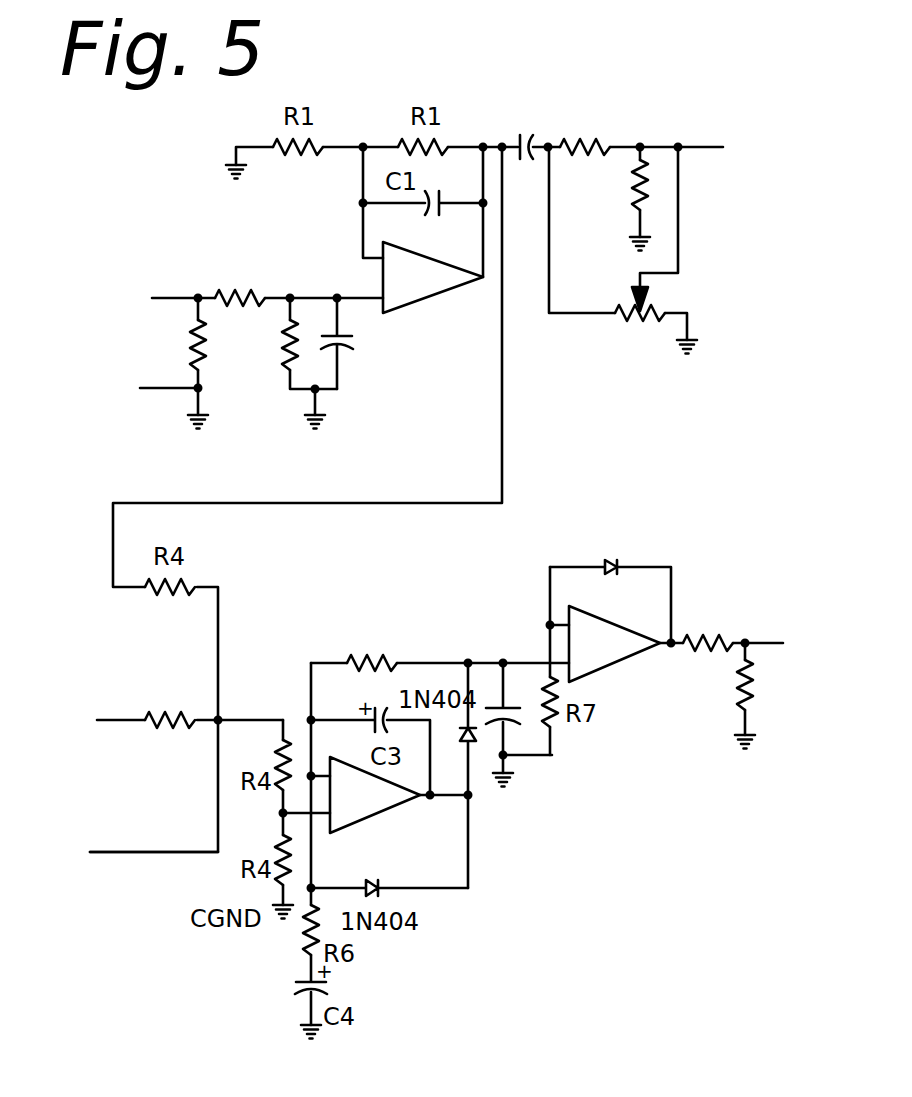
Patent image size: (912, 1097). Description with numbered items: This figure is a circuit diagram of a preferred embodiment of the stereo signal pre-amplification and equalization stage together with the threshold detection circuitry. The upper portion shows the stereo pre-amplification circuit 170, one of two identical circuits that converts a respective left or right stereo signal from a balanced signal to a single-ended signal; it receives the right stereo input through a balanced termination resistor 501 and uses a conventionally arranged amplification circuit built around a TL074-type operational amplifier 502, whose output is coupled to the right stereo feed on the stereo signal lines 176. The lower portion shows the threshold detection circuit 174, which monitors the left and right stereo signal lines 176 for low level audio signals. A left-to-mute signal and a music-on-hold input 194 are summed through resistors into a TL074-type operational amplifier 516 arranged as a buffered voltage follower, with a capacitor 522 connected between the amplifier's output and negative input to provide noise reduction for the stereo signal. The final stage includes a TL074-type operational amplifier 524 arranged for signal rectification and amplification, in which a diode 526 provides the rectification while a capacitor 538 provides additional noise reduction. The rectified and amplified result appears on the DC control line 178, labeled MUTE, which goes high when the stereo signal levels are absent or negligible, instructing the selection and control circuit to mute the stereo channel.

The stereo pre-amplification circuit 170 is at (553, 89).
The stereo signal lines 176 is at (658, 307).
The balanced termination resistor 501 is at (205, 348).
The operational amplifier 502 is at (427, 300).
The operational amplifier 516 is at (380, 815).
The capacitor 522 is at (402, 662).
The operational amplifier 524 is at (617, 664).
The diode 526 is at (613, 566).
The capacitor 538 is at (490, 706).
The threshold detection circuit 174 is at (150, 703).
The DC control line 178 is at (759, 692).
The music on hold input 194 is at (117, 886).